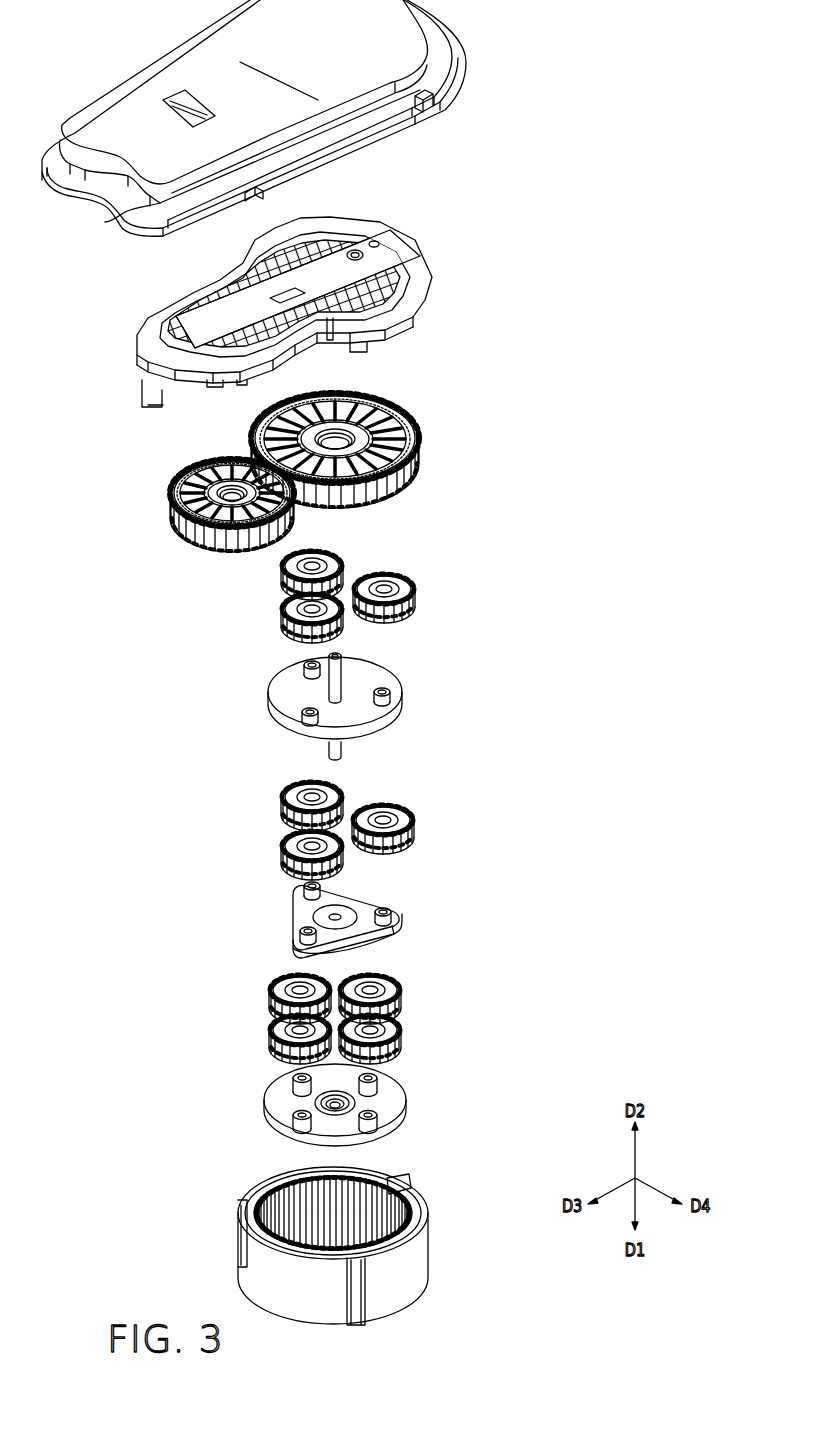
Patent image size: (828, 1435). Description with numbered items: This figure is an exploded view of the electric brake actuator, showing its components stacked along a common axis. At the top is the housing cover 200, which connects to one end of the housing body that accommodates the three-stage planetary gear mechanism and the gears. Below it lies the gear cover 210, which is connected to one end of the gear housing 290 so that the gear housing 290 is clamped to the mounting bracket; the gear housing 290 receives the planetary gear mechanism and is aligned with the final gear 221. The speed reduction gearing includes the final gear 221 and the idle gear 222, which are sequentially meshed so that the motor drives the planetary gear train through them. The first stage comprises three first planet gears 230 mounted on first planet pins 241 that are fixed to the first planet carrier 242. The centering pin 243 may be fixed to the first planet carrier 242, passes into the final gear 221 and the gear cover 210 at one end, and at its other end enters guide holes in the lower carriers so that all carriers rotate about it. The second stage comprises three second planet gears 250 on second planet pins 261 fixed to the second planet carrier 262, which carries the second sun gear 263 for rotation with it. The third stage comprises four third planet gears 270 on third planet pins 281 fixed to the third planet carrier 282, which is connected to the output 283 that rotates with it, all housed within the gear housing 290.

The housing cover 200 is at (467, 57).
The gear cover 210 is at (435, 289).
The final gear 221 is at (418, 444).
The idle gear 222 is at (170, 511).
The first planet gear 230 is at (423, 550).
The first planet pin 241 is at (385, 693).
The first planet carrier 242 is at (405, 703).
The centering pin 243 is at (333, 692).
The second planet gear 250 is at (423, 780).
The second planet pin 261 is at (386, 908).
The second planet carrier 262 is at (400, 932).
The second sun gear 263 is at (350, 948).
The third planet gear 270 is at (413, 973).
The third planet pin 281 is at (377, 1084).
The third planet carrier 282 is at (408, 1108).
The output 283 is at (337, 1105).
The gear housing 290 is at (430, 1243).